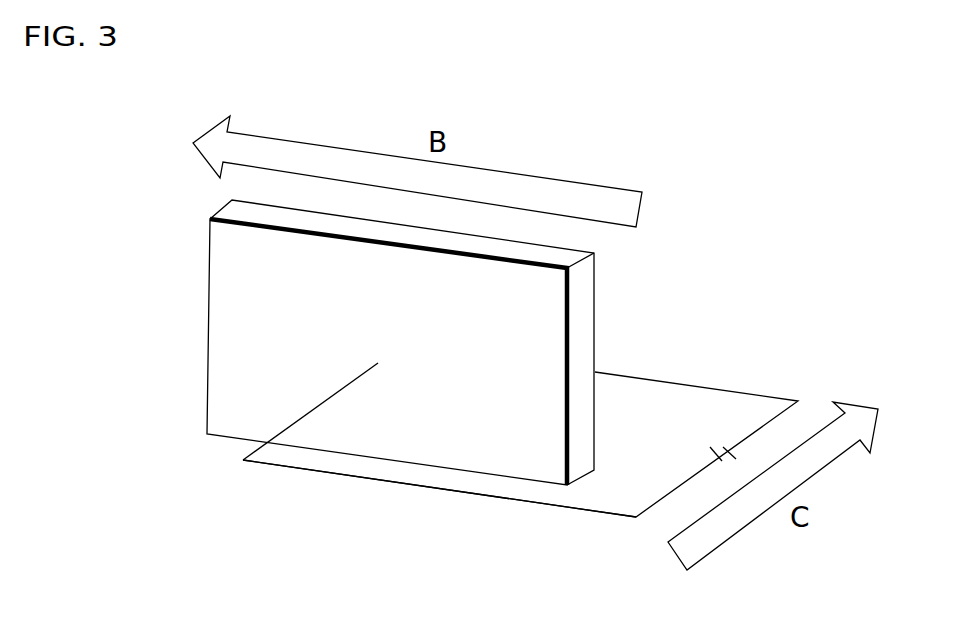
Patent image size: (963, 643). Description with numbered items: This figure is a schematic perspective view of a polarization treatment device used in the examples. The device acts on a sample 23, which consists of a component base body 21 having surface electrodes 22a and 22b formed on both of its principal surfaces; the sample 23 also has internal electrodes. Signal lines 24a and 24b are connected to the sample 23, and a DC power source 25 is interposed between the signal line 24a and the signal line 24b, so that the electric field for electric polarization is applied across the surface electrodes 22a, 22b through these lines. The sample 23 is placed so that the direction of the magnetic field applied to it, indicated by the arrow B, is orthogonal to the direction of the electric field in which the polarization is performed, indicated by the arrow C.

The component base body 21 is at (218, 208).
The surface electrode 22a is at (226, 247).
The surface electrode 22b is at (250, 190).
The sample 23 is at (104, 181).
The signal line 24a is at (683, 384).
The signal line 24b is at (521, 500).
The DC power source 25 is at (731, 453).